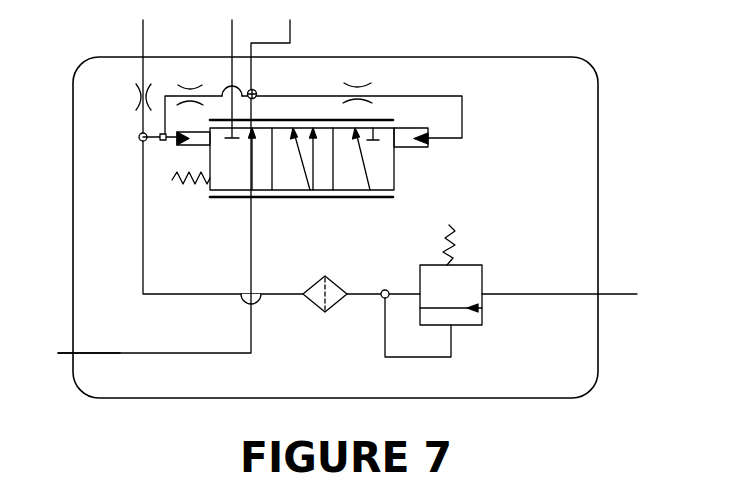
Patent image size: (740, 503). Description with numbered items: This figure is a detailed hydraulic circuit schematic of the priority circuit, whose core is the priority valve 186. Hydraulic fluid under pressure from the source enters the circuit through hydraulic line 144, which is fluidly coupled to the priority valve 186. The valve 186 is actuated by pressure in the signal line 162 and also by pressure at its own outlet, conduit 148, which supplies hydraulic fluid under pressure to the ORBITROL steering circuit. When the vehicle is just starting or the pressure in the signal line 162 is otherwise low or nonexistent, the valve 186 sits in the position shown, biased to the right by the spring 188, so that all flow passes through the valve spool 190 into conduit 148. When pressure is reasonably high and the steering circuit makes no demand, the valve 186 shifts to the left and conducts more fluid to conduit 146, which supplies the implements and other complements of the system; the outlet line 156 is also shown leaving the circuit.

The hydraulic line 144 is at (63, 349).
The conduit 146 is at (232, 34).
The conduit 148 is at (290, 28).
The outlet line with pressure relief valve 156 is at (610, 294).
The signal line 162 is at (143, 34).
The priority valve 186 is at (288, 197).
The spring 188 is at (166, 187).
The valve spool 190 is at (394, 165).